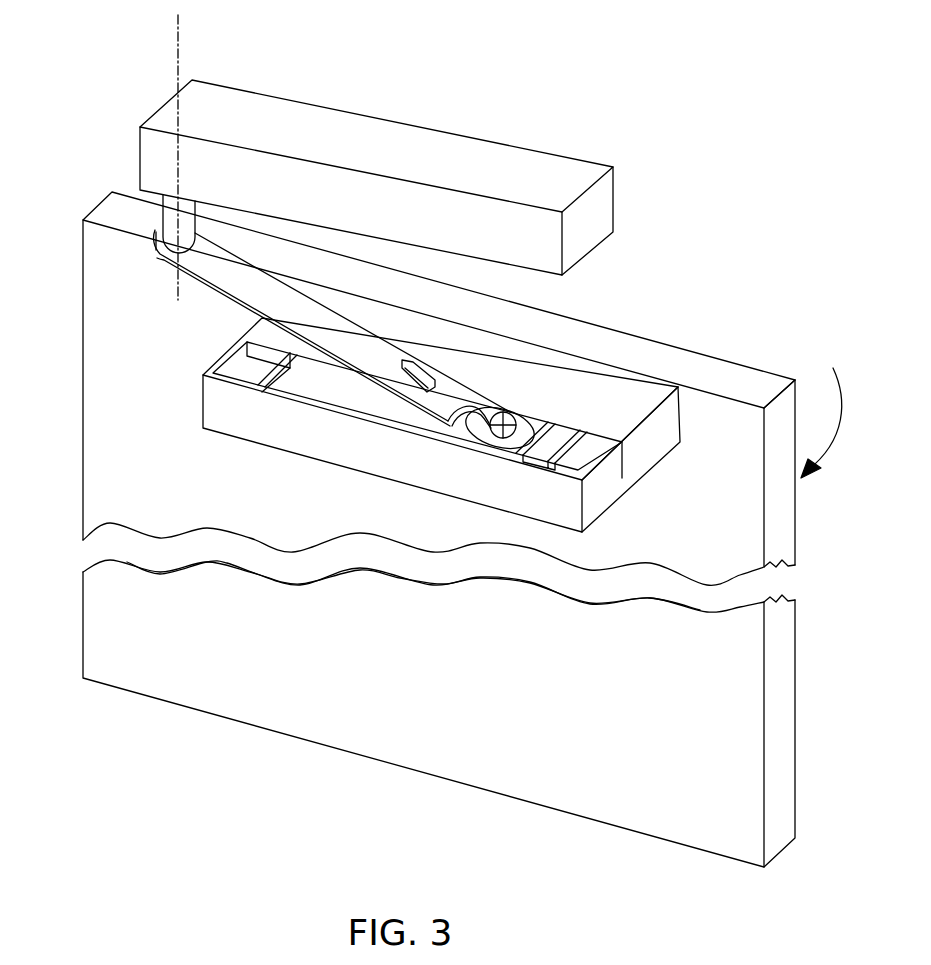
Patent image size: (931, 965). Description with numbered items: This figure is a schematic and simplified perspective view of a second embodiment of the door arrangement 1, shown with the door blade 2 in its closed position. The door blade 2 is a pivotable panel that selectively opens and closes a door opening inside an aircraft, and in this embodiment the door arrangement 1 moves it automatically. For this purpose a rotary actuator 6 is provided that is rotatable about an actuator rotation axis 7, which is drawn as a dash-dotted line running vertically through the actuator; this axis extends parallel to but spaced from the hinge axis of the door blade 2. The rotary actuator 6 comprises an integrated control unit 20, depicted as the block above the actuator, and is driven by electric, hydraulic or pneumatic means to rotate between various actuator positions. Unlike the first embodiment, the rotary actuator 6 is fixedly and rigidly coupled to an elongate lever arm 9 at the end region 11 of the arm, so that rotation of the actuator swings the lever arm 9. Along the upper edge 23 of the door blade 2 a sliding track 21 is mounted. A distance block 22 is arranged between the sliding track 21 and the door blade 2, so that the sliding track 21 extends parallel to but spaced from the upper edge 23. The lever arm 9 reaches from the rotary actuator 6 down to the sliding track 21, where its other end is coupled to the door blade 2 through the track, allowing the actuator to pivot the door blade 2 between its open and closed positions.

The door arrangement 1 is at (728, 234).
The door blade 2 is at (780, 537).
The rotary actuator 6 is at (167, 222).
The actuator rotation axis 7 is at (182, 32).
The lever arm 9 is at (228, 278).
The end region 11 is at (150, 262).
The control unit 20 is at (553, 158).
The sliding track 21 is at (595, 492).
The distance block 22 is at (657, 440).
The upper edge 23 is at (752, 378).